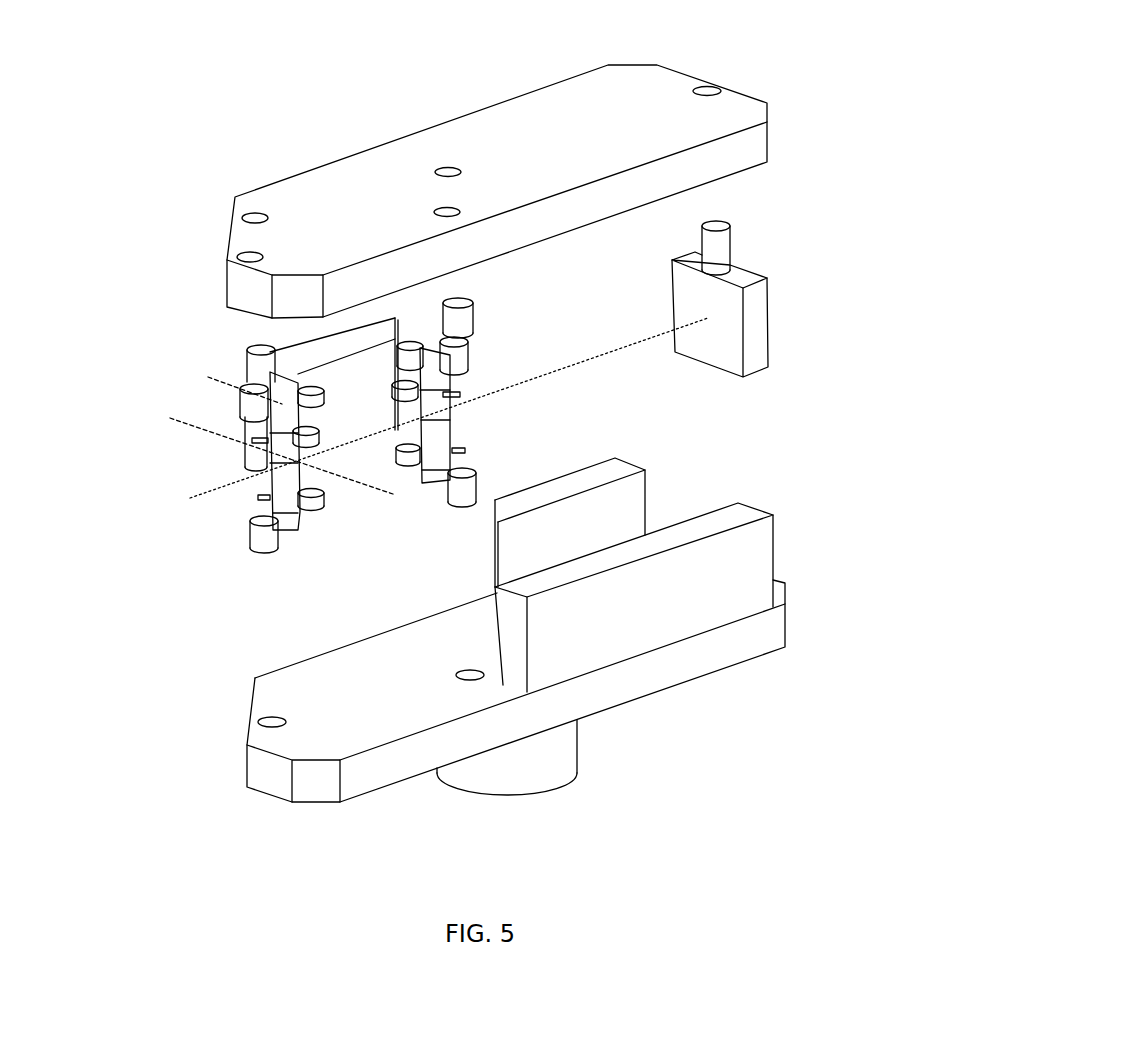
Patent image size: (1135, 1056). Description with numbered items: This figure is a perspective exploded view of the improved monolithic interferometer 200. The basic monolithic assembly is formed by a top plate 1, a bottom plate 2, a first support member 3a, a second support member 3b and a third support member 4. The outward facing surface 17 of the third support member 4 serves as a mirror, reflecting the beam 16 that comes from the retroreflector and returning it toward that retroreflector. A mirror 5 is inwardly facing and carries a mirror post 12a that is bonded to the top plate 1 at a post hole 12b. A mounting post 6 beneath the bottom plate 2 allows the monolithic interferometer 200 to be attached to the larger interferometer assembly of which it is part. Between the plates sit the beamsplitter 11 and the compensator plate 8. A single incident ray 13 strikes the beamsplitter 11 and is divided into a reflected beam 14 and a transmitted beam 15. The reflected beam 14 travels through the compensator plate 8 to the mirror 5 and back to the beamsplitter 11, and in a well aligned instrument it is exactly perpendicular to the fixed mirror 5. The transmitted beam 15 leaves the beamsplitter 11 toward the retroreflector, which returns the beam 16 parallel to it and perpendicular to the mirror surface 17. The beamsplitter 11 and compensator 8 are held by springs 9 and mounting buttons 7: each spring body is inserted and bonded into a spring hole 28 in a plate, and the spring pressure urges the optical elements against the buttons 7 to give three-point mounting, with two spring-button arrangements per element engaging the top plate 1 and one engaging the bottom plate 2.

The monolithic interferometer 200 is at (306, 81).
The top plate 1 is at (628, 103).
The bottom plate 2 is at (580, 692).
The first support member 3a is at (763, 568).
The second support member 3b is at (637, 503).
The third support member 4 is at (345, 377).
The mirror 5 is at (762, 298).
The mounting post 6 is at (480, 782).
The mounting button 7 is at (317, 507).
The compensator plate 8 is at (432, 440).
The spring 9 is at (462, 357).
The beamsplitter 11 is at (280, 477).
The mirror post 12a is at (717, 240).
The post hole 12b is at (707, 91).
The incident ray 13 is at (370, 492).
The reflected beam 14 is at (600, 355).
The transmitted beam 15 is at (205, 432).
The beam 16 is at (227, 386).
The outward facing surface 17 is at (345, 333).
The spring hole 28 is at (252, 214).